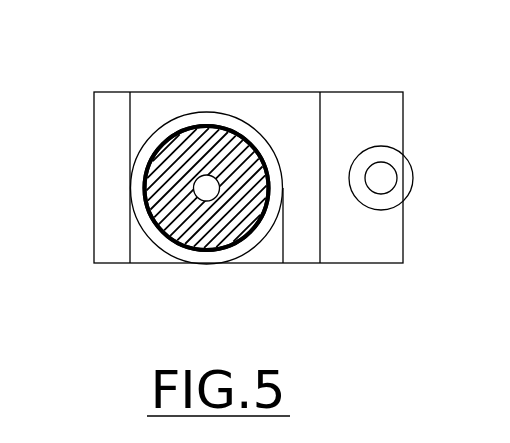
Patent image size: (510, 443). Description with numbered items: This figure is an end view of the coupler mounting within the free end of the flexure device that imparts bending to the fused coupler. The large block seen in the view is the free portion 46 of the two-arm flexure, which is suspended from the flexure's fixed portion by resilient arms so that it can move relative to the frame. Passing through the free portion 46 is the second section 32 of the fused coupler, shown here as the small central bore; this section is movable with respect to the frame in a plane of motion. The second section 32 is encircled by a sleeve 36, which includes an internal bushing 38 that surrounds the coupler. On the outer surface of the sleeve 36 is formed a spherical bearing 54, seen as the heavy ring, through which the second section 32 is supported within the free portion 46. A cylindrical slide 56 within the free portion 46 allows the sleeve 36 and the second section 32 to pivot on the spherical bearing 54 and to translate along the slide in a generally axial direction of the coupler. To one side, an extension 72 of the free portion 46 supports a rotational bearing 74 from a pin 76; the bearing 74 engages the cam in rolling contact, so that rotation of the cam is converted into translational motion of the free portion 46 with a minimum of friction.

The second section 32 is at (210, 187).
The sleeve 36 is at (170, 243).
The internal bushing 38 is at (180, 167).
The free portion 46 is at (107, 203).
The spherical bearing 54 is at (257, 252).
The cylindrical slide 56 is at (172, 122).
The extension 72 is at (352, 108).
The rotational bearing 74 is at (405, 165).
The pin 76 is at (383, 193).